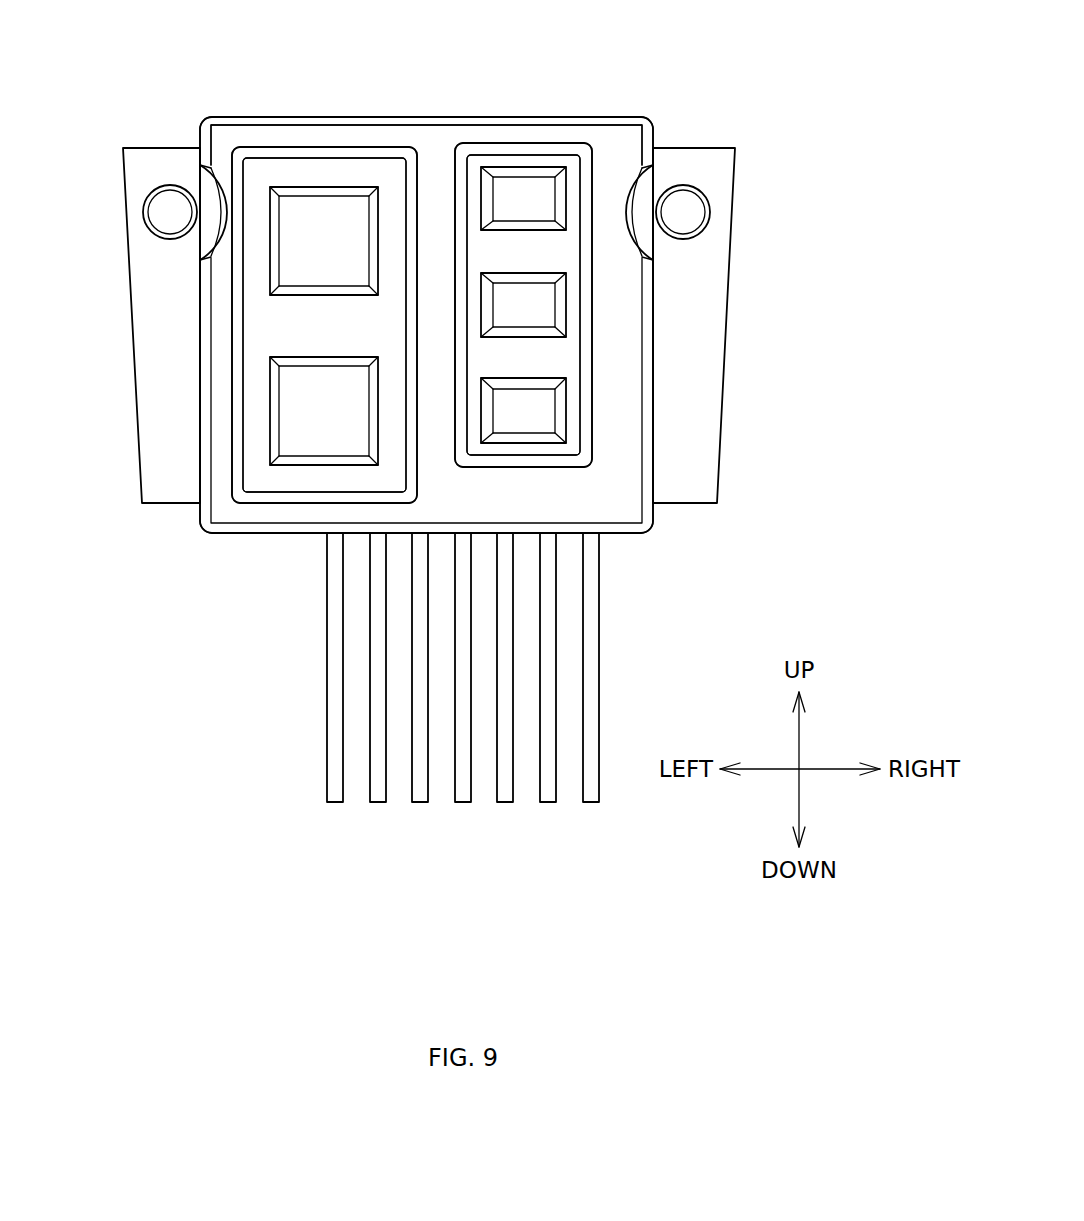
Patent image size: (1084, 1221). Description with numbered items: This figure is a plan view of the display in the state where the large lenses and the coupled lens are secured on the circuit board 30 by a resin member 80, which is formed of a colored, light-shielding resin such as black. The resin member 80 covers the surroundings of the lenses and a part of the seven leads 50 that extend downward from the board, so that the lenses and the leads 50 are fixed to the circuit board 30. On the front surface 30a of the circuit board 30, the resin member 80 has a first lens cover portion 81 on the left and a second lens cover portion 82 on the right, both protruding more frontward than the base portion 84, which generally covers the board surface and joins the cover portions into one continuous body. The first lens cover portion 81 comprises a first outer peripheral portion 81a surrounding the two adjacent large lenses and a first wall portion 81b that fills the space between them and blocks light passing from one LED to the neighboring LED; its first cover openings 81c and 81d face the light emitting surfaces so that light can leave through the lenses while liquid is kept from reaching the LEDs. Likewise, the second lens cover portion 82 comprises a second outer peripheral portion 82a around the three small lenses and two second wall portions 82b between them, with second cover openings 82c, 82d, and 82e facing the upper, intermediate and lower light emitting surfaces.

The circuit board 30 is at (687, 147).
The front surface of the circuit board 30a is at (700, 378).
The leads 50 is at (591, 775).
The resin member 80 is at (605, 122).
The first lens cover portion 81 is at (287, 158).
The first outer peripheral portion 81a is at (255, 262).
The first wall portion 81b is at (310, 327).
The first cover opening 81c is at (332, 227).
The first cover opening 81d is at (310, 425).
The second lens cover portion 82 is at (498, 150).
The second outer peripheral portion 82a is at (570, 172).
The second wall portion 82b is at (552, 247).
The second cover opening 82c is at (520, 195).
The second cover opening 82d is at (533, 308).
The second cover opening 82e is at (533, 410).
The base portion 84 is at (437, 142).